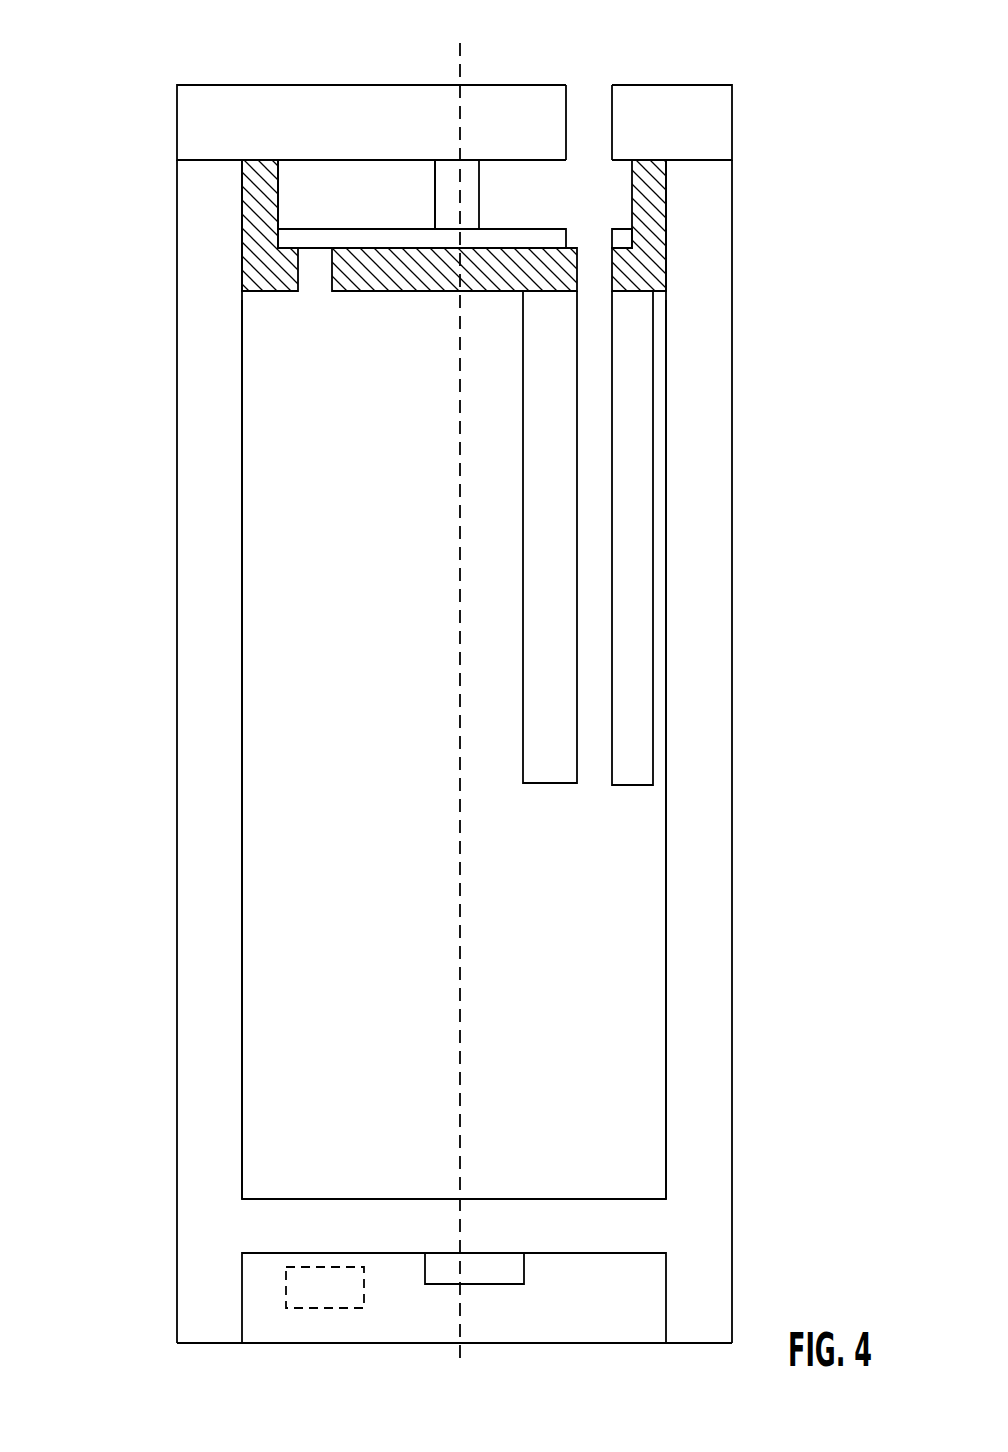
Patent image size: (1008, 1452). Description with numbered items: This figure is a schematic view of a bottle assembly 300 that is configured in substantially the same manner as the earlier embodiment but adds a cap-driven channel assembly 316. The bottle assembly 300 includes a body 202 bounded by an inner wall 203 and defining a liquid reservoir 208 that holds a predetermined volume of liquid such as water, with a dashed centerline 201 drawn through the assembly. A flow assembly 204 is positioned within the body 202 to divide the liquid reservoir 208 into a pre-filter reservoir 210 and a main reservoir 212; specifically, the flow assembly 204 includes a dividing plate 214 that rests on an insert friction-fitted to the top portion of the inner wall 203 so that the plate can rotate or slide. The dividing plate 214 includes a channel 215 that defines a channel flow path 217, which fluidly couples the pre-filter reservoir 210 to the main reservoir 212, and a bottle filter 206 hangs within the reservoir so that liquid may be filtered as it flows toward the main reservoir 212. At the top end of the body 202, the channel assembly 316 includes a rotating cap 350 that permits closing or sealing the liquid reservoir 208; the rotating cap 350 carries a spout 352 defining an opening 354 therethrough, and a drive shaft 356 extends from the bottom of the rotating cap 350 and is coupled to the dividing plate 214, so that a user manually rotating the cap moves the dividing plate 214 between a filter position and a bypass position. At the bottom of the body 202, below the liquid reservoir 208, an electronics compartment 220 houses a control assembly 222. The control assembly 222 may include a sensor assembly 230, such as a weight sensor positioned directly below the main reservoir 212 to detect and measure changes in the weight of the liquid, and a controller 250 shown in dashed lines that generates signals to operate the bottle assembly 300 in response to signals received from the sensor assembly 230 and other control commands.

The bottle assembly 300 is at (107, 89).
The central axis 201 is at (461, 977).
The body 202 is at (190, 668).
The inner wall 203 is at (243, 833).
The flow assembly 204 is at (392, 284).
The bottle filter 206 is at (523, 443).
The liquid reservoir 208 is at (277, 546).
The pre-filter reservoir 210 is at (303, 180).
The main reservoir 212 is at (627, 1043).
The dividing plate 214 is at (361, 237).
The channel 215 is at (564, 228).
The channel flow path 217 is at (592, 221).
The electronics compartment 220 is at (318, 1318).
The control assembly 222 is at (502, 1347).
The sensor assembly 230 is at (425, 1265).
The controller 250 is at (317, 1267).
The channel assembly 316 is at (415, 117).
The rotating cap 350 is at (661, 102).
The spout 352 is at (567, 102).
The opening 354 is at (598, 77).
The drive shaft 356 is at (468, 178).